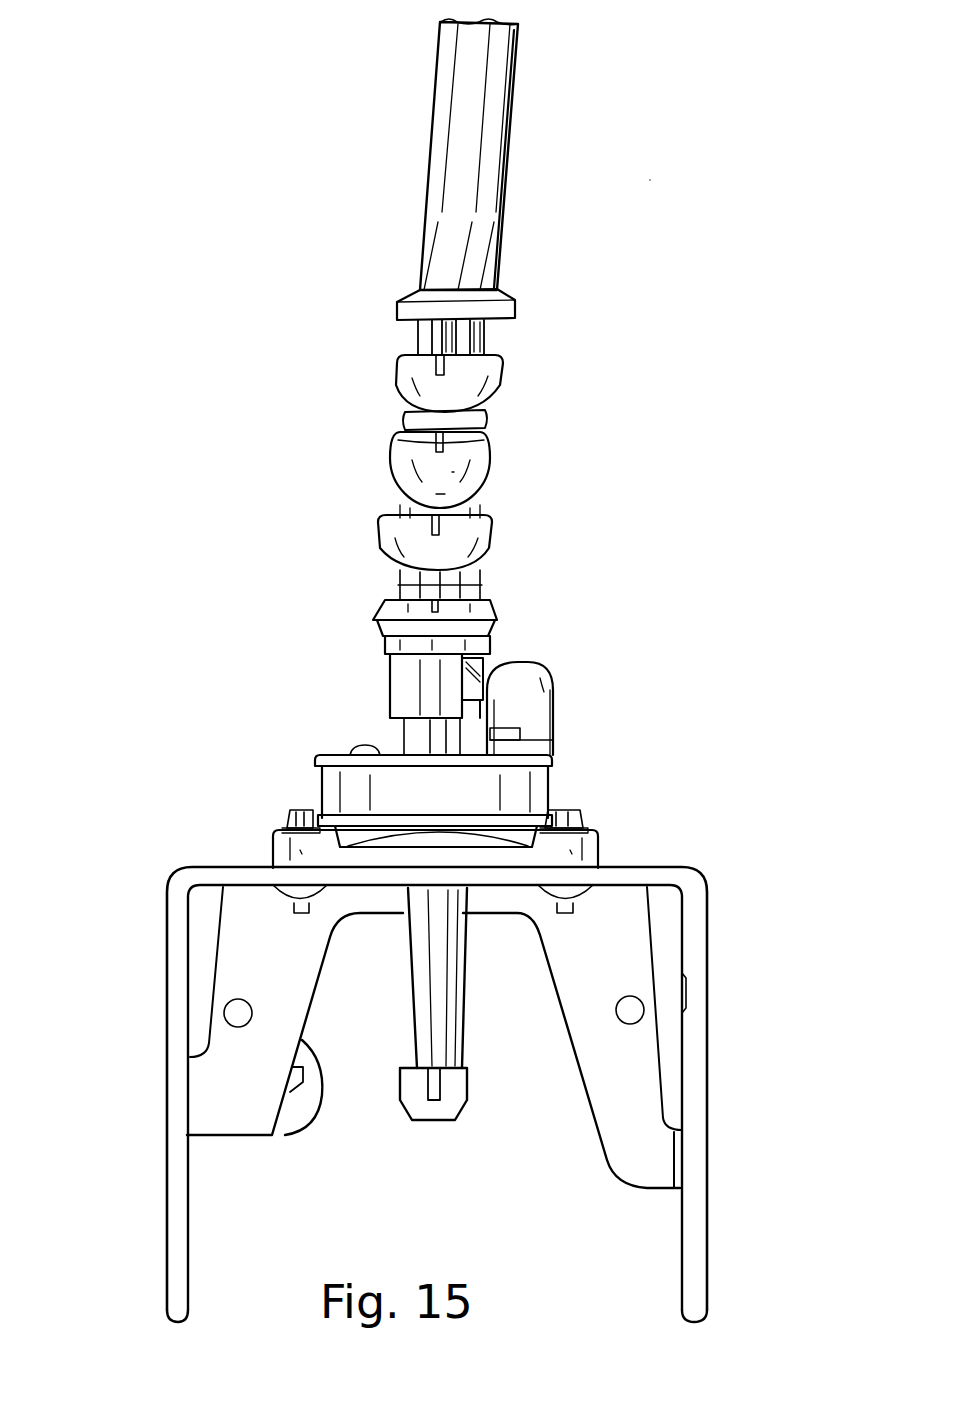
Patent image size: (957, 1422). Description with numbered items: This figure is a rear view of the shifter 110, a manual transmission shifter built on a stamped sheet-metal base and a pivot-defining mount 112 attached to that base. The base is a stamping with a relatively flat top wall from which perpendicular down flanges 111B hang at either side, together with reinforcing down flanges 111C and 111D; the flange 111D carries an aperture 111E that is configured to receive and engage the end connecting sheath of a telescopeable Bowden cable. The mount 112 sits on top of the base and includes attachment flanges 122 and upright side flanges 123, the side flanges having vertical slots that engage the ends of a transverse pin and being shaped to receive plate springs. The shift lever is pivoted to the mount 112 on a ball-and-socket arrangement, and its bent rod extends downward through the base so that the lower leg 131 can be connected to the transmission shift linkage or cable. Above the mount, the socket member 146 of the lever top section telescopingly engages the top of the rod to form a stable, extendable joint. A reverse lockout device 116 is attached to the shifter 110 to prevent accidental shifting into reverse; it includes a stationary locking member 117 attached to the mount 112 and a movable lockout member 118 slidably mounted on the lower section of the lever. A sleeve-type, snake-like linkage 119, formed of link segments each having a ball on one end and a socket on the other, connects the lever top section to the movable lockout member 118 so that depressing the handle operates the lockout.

The shifter 110 is at (655, 173).
The socket member 146 is at (437, 183).
The snake-like linkage 119 is at (505, 447).
The reverse lockout device 116 is at (588, 648).
The movable lockout member 118 is at (483, 670).
The stationary locking member 117 is at (560, 686).
The pivot-defining mount 112 is at (306, 790).
The upright side flanges 123 is at (553, 780).
The attachment flanges 122 is at (600, 836).
The perpendicular down flanges 111B is at (167, 1213).
The reinforcing down flange 111C is at (614, 1172).
The reinforcing down flange 111D is at (235, 1136).
The aperture 111E is at (317, 1113).
The lower leg 131 is at (457, 1013).